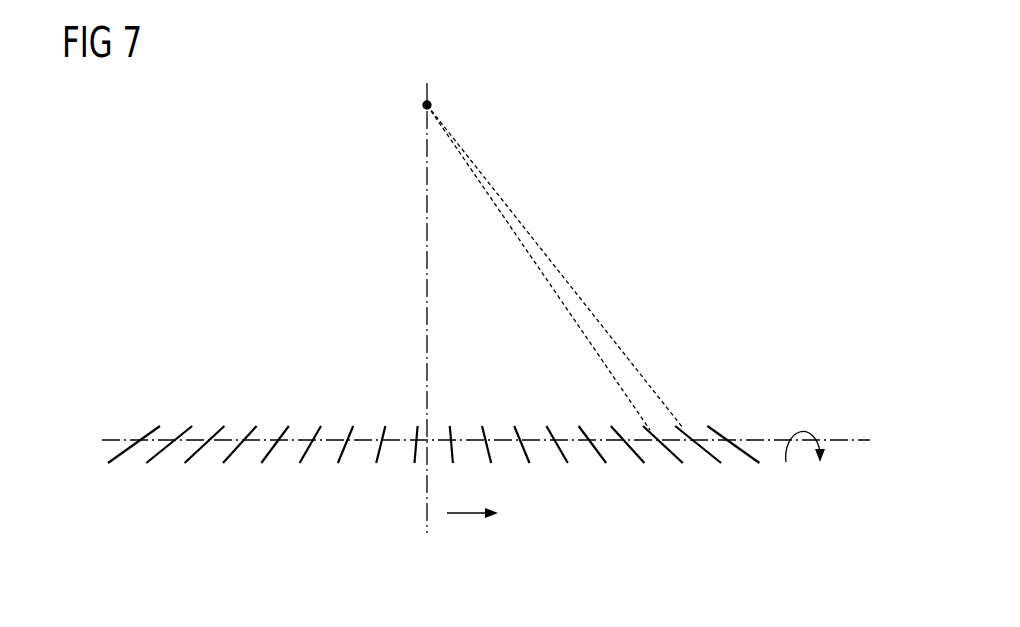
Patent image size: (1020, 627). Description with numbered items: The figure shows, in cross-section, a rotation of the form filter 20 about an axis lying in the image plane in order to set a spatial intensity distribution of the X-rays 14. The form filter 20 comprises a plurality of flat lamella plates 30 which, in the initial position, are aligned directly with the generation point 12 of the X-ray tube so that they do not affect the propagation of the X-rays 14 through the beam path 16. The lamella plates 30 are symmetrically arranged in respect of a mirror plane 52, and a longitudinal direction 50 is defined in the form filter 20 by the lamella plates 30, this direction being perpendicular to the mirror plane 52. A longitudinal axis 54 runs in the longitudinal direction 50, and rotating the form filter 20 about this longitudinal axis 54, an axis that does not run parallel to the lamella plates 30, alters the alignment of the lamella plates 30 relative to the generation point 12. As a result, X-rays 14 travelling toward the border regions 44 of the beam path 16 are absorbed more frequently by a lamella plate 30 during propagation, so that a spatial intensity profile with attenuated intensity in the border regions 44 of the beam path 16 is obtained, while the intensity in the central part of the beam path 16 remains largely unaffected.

The generation point 12 is at (431, 99).
The X-rays 14 is at (483, 183).
The beam path 16 is at (592, 128).
The form filter 20 is at (410, 455).
The lamella plates 30 is at (150, 427).
The border regions 44 is at (684, 480).
The longitudinal direction 50 is at (465, 515).
The mirror plane 52 is at (427, 168).
The longitudinal axis 54 is at (852, 440).